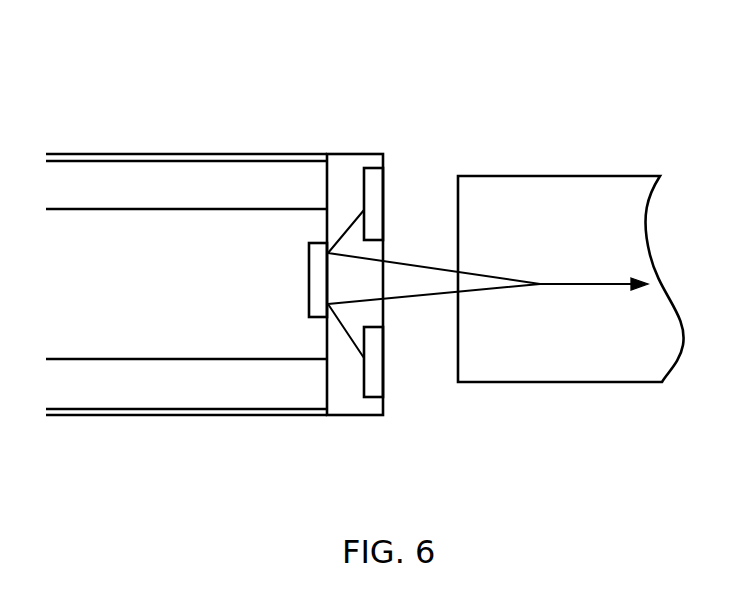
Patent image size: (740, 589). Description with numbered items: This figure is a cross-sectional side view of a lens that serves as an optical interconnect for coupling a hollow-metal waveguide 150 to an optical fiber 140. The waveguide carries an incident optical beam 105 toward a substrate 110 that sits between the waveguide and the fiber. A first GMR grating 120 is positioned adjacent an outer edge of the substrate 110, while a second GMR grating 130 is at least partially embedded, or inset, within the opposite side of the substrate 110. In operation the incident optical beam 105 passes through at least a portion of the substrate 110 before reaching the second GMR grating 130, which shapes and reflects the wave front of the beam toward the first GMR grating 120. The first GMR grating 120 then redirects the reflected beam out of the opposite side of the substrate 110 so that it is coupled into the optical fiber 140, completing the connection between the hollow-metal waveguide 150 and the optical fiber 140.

The hollow-metal waveguide 150 is at (74, 153).
The incident optical beam 105 is at (188, 209).
The substrate 110 is at (350, 154).
The first GMR grating 120 is at (309, 276).
The second GMR grating 130 is at (385, 194).
The optical fiber 140 is at (603, 176).